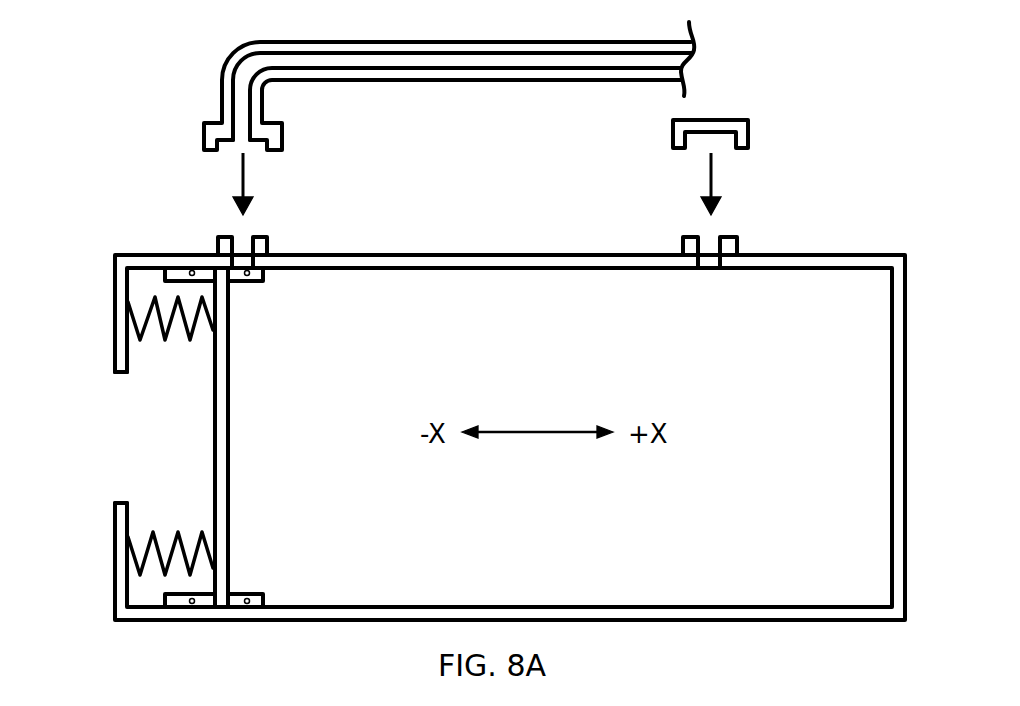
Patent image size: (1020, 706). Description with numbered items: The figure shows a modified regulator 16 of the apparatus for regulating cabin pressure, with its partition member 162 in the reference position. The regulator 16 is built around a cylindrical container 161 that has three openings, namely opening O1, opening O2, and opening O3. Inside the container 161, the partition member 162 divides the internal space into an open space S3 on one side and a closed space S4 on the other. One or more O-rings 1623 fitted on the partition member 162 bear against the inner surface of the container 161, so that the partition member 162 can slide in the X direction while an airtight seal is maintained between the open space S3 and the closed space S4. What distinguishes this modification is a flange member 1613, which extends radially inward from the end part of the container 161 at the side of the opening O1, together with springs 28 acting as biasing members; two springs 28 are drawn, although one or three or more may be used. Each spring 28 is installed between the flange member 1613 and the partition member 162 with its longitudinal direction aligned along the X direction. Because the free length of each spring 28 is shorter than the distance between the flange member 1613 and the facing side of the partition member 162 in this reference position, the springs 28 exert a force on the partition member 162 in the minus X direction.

The regulator 16 is at (735, 63).
The container 161 is at (460, 255).
The flange member 1613 is at (113, 320).
The partition member 162 is at (228, 335).
The O-ring 1623 is at (202, 607).
The spring 28 is at (175, 320).
The opening O1 is at (113, 437).
The opening O2 is at (241, 232).
The opening O3 is at (709, 230).
The open space S3 is at (197, 444).
The closed space S4 is at (806, 448).